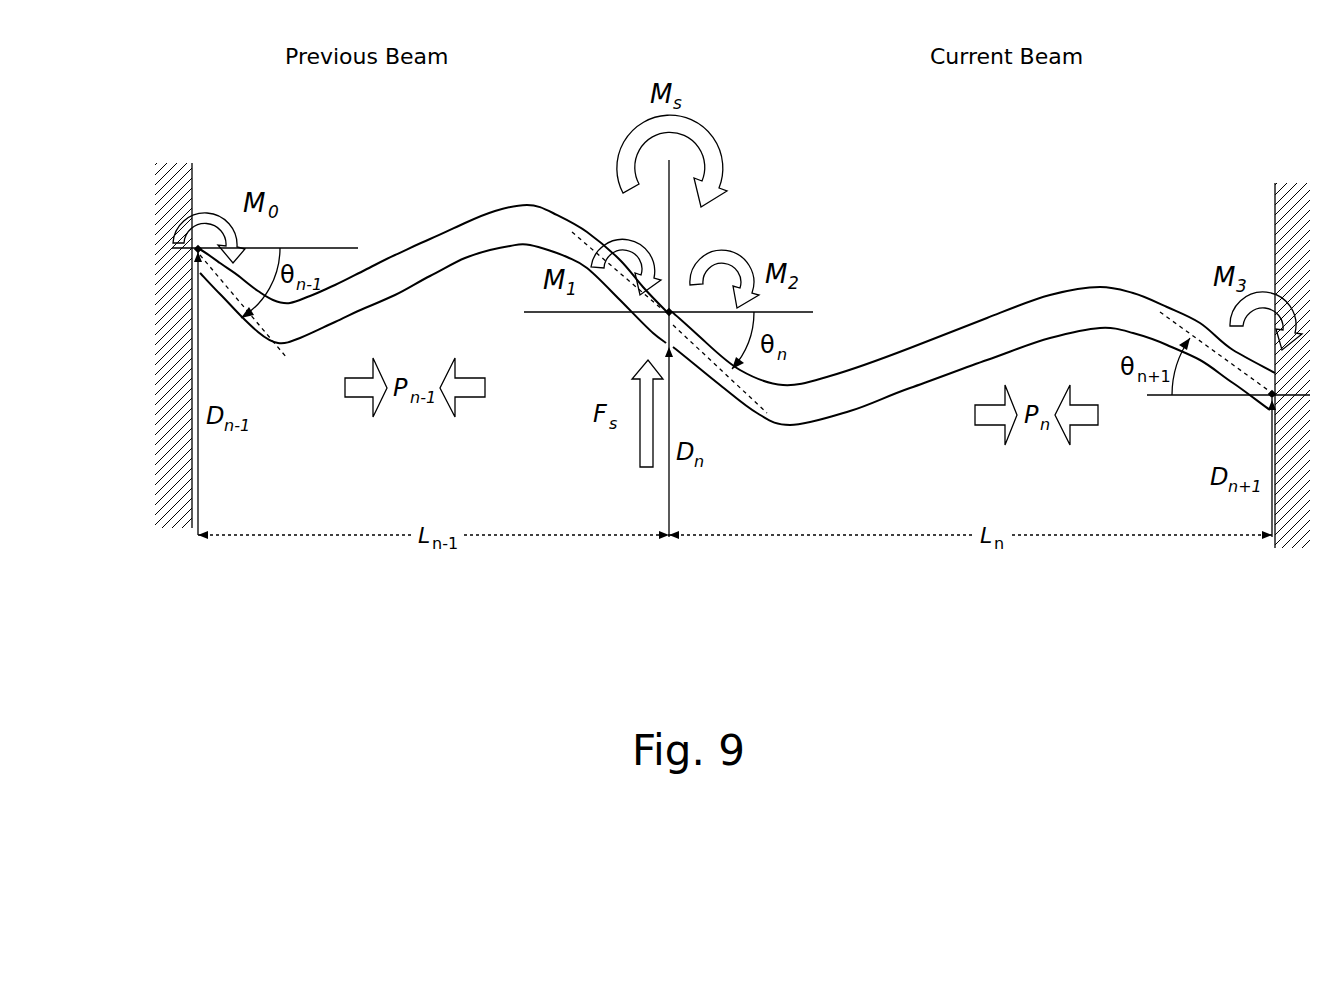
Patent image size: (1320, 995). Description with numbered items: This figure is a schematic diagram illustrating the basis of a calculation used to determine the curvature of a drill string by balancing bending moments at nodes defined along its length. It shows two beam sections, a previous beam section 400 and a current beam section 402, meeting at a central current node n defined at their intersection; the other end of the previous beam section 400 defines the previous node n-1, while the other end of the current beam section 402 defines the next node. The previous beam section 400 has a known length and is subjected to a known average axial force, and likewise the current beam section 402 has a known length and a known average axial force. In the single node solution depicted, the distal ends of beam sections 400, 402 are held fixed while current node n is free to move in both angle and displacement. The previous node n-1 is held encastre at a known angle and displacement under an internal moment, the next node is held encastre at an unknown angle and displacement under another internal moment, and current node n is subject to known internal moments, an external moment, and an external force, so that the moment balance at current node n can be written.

The previous beam section 400 is at (507, 206).
The current beam section 402 is at (987, 318).
The previous node n-1 is at (207, 243).
The current node n is at (665, 318).